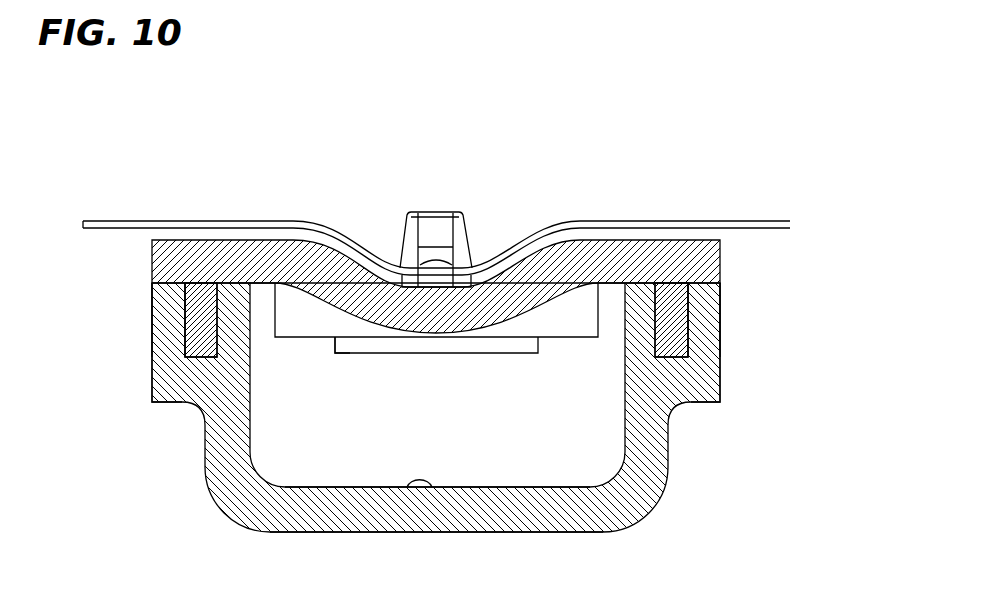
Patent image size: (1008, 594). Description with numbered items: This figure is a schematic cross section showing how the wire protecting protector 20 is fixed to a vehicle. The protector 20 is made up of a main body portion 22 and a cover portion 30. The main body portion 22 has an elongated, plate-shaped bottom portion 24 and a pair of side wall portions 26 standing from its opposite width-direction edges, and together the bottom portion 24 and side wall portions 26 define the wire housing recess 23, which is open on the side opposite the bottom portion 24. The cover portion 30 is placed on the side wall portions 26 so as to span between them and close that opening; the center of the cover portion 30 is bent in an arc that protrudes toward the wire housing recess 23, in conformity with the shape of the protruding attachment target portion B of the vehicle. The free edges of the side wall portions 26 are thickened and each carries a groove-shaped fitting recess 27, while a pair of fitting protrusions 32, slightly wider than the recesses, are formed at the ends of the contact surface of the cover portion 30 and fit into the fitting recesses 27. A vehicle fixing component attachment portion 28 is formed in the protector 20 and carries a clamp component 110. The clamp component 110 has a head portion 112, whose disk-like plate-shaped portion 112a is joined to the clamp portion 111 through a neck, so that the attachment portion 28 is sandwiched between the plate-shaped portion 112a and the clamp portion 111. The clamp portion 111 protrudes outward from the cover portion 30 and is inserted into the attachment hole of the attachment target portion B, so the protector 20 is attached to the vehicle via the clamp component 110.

The wire protecting protector 20 is at (459, 414).
The main body portion 22 is at (441, 436).
The wire housing recess 23 is at (409, 490).
The bottom portion 24 is at (455, 533).
The side wall portions 26 is at (152, 378).
The fitting recess 27 is at (200, 331).
The vehicle fixing component attachment portion 28 is at (569, 341).
The cover portion 30 is at (725, 246).
The fitting protrusions 32 is at (184, 297).
The clamp component 110 is at (487, 214).
The clamp portion 111 is at (437, 211).
The head portion 112 is at (436, 381).
The plate-shaped portion 112a is at (366, 357).
The attachment target portion B is at (678, 217).